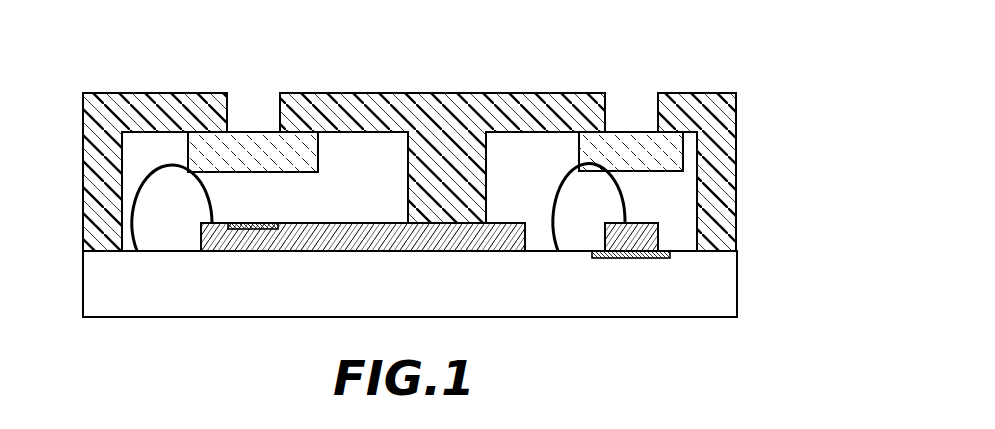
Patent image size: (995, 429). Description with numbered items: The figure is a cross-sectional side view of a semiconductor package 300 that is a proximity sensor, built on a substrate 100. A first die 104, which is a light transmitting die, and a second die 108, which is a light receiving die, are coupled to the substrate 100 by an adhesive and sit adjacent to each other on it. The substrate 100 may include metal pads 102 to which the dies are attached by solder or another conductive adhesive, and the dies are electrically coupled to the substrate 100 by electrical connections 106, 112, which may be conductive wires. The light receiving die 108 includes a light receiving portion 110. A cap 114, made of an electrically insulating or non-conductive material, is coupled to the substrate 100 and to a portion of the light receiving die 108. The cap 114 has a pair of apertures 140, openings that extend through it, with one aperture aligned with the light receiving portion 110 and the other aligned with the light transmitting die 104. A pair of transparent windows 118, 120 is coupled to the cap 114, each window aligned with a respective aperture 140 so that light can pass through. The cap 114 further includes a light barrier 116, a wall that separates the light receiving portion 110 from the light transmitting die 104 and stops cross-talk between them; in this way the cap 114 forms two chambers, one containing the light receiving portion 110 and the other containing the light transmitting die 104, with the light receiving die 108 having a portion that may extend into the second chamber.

The semiconductor package 300 is at (719, 26).
The substrate 100 is at (710, 287).
The metal pads 102 is at (666, 256).
The first die 104 is at (645, 235).
The electrical connection 106 is at (608, 196).
The second die 108 is at (312, 240).
The light receiving portion 110 is at (238, 232).
The electrical connection 112 is at (155, 198).
The cap 114 is at (107, 113).
The light barrier 116 is at (448, 157).
The window 118 is at (637, 142).
The window 120 is at (253, 142).
The apertures 140 is at (242, 95).